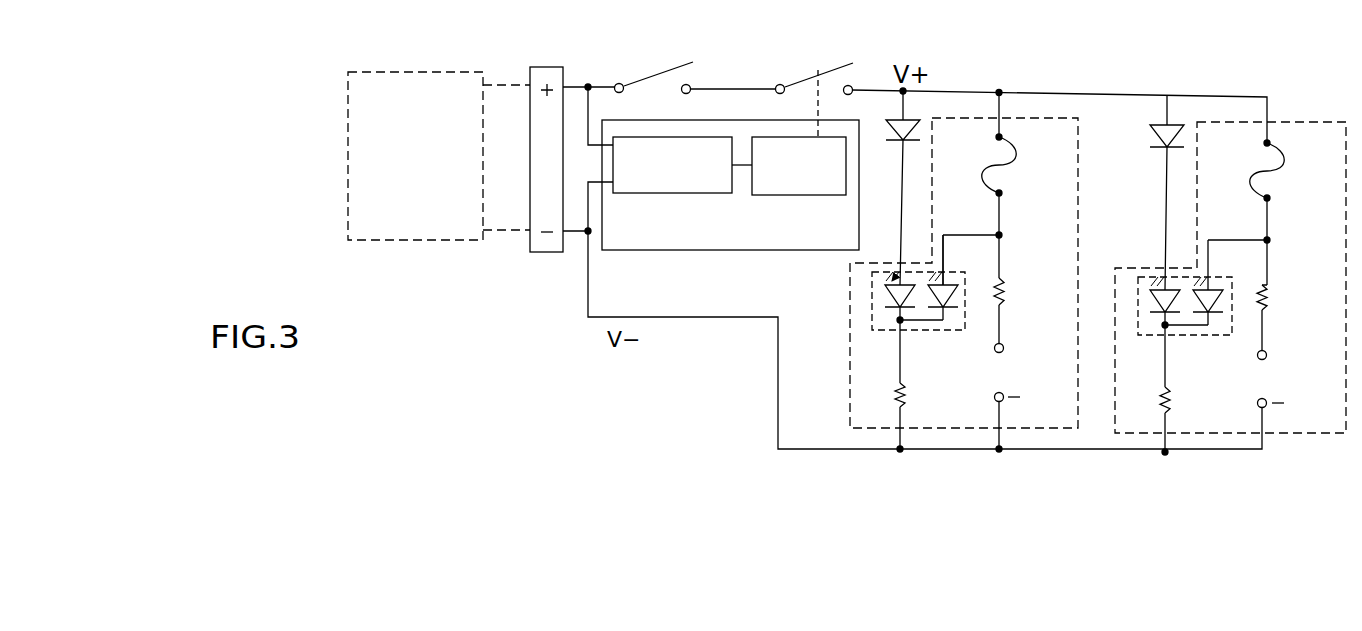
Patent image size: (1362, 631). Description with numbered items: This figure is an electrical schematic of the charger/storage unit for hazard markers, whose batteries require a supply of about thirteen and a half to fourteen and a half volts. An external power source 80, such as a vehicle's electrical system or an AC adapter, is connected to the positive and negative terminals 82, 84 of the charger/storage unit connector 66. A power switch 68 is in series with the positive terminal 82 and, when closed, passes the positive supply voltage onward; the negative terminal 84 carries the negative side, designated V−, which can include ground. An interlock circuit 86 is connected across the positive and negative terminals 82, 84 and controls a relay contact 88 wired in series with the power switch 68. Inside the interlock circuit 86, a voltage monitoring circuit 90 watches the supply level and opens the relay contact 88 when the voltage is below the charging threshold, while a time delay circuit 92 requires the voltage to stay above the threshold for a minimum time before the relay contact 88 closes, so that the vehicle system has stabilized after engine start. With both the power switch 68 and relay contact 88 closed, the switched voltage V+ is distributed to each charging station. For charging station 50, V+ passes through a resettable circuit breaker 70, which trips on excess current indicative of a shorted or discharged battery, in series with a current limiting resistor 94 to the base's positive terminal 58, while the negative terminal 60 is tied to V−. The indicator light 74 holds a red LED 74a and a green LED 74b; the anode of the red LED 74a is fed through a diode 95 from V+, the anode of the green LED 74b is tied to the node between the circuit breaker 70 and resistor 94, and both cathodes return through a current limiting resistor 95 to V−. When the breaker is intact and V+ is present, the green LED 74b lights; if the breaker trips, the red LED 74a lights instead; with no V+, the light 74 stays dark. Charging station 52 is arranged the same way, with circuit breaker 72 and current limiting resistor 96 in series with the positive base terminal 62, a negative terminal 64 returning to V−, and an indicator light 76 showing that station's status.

The external power source 80 is at (416, 70).
The charger/storage unit connector 66 is at (553, 67).
The positive terminal 82 is at (529, 82).
The negative terminal 84 is at (523, 238).
The power switch 68 is at (651, 73).
The relay contact 88 is at (809, 73).
The interlock circuit 86 is at (737, 250).
The voltage monitoring circuit 90 is at (623, 195).
The time delay circuit 92 is at (823, 195).
The diode and current limiting resistor 95 is at (915, 133).
The charging station 50 is at (1042, 118).
The charging station 52 is at (1322, 122).
The resettable circuit breaker 70 is at (1022, 168).
The circuit breaker 72 is at (1287, 172).
The current limiting resistor 94 is at (1020, 288).
The current limiting resistor 96 is at (1287, 300).
The indicator light 74 is at (883, 303).
The red LED 74a is at (880, 293).
The green LED 74b is at (962, 295).
The indicator light 76 is at (1138, 295).
The positive terminal 58 is at (993, 349).
The negative terminal 60 is at (1003, 396).
The positive base terminal 62 is at (1258, 355).
The negative terminal 64 is at (1267, 401).